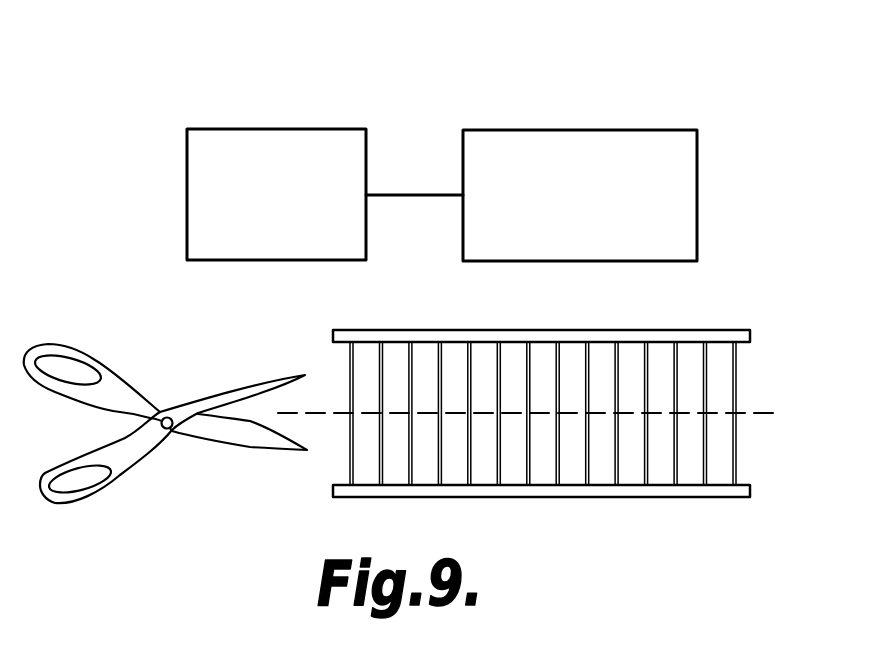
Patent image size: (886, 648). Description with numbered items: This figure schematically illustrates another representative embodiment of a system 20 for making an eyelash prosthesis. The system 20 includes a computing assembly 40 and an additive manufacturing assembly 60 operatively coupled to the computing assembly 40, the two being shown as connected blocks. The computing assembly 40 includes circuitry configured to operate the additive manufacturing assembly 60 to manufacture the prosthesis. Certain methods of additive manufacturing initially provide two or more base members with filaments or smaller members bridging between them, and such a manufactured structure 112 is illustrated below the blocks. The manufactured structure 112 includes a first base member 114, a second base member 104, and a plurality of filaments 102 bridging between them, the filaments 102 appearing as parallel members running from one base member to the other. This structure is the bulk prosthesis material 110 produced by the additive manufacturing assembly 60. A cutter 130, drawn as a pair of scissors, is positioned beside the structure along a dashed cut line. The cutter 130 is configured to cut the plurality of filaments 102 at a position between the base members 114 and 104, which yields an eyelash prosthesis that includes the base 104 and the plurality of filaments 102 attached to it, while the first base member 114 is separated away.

The system 20 is at (521, 69).
The computing assembly 40 is at (187, 183).
The additive manufacturing assembly 60 is at (698, 189).
The cutter 130 is at (168, 400).
The manufactured structure 112 is at (584, 379).
The first base member 114 is at (750, 337).
The bulk prosthesis material 110 is at (738, 369).
The plurality of filaments 102 is at (737, 441).
The second base member 104 is at (750, 489).